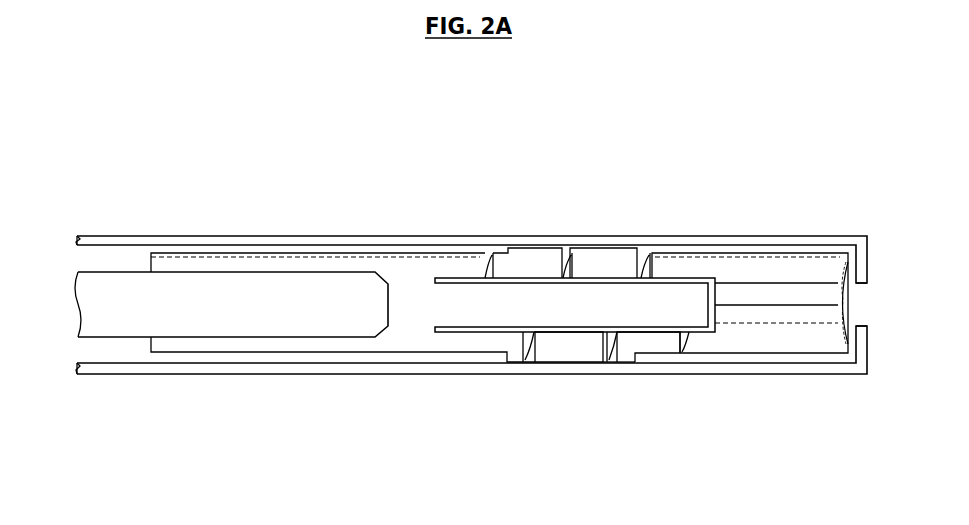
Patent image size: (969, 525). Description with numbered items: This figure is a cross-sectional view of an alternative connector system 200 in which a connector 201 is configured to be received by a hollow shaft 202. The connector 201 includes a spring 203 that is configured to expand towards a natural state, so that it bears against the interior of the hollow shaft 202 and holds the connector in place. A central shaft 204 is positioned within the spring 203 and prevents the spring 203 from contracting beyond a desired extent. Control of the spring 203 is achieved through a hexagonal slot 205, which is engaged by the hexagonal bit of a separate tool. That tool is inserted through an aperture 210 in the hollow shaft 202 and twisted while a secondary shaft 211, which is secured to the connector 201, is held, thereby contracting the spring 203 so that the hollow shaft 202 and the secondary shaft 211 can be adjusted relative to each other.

The connector system 200 is at (156, 141).
The connector 201 is at (402, 253).
The hollow shaft 202 is at (318, 375).
The spring 203 is at (703, 348).
The central shaft 204 is at (553, 306).
The hexagonal slot 205 is at (785, 293).
The aperture 210 is at (867, 310).
The secondary shaft 211 is at (56, 317).